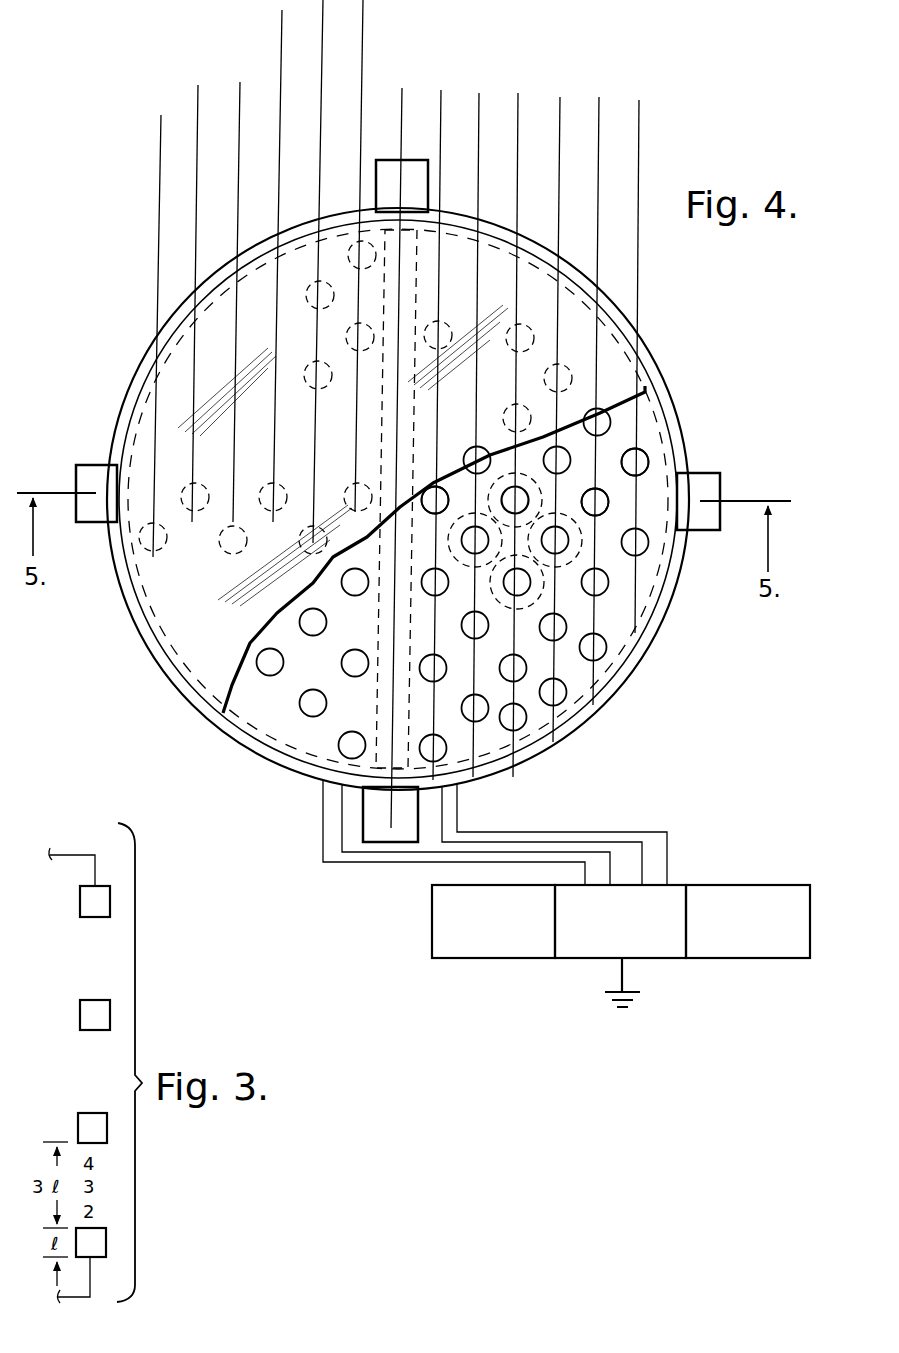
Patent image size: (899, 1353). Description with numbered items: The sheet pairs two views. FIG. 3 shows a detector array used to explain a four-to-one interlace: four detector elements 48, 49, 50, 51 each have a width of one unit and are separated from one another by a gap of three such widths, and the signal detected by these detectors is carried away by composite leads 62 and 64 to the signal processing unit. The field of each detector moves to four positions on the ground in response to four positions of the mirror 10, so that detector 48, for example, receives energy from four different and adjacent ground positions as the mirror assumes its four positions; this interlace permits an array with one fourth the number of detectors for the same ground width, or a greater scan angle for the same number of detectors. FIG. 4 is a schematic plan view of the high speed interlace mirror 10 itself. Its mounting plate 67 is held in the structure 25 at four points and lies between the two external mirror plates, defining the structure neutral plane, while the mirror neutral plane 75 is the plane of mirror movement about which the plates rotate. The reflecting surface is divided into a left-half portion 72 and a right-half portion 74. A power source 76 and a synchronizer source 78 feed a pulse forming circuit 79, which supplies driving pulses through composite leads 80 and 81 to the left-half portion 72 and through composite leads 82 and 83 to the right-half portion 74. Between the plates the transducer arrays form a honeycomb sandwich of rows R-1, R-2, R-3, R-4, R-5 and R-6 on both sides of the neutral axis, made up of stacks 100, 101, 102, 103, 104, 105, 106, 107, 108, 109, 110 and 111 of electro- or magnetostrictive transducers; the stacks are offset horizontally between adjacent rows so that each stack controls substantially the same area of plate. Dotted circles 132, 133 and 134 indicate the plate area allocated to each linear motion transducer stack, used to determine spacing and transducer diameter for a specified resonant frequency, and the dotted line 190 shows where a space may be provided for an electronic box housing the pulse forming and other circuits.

In FIG. 4, the high speed interlace mirror 10 is at (140, 360).
In FIG. 4, the structure 25 is at (423, 182).
In FIG. 3, the detector element 48 is at (105, 1257).
In FIG. 3, the detector element 49 is at (80, 1120).
In FIG. 3, the detector element 50 is at (80, 1007).
In FIG. 3, the detector element 51 is at (85, 910).
In FIG. 3, the composite lead 62 is at (75, 855).
In FIG. 3, the composite lead 64 is at (85, 1300).
In FIG. 4, the mounting plate 67 is at (655, 625).
In FIG. 4, the left-half portion 72 is at (270, 322).
In FIG. 4, the right-half portion 74 is at (550, 307).
In FIG. 4, the mirror neutral plane 75 is at (402, 118).
In FIG. 4, the power source 76 is at (440, 950).
In FIG. 4, the synchronizer source 78 is at (728, 953).
In FIG. 4, the pulse forming circuit 79 is at (573, 953).
In FIG. 4, the composite lead 80 is at (323, 862).
In FIG. 4, the composite lead 81 is at (378, 860).
In FIG. 4, the composite lead 82 is at (645, 843).
In FIG. 4, the composite lead 83 is at (668, 860).
In FIG. 4, the transducer stack 100 is at (643, 472).
In FIG. 4, the transducer stack 101 is at (602, 514).
In FIG. 4, the transducer stack 102 is at (568, 463).
In FIG. 4, the transducer stack 103 is at (502, 585).
In FIG. 4, the transducer stack 104 is at (497, 500).
In FIG. 4, the transducer stack 105 is at (445, 478).
In FIG. 4, the transducer stack 106 is at (355, 490).
In FIG. 4, the transducer stack 107 is at (305, 560).
In FIG. 4, the transducer stack 108 is at (275, 490).
In FIG. 4, the transducer stack 109 is at (225, 560).
In FIG. 4, the transducer stack 110 is at (190, 490).
In FIG. 4, the transducer stack 111 is at (152, 553).
In FIG. 4, the dotted circle 132 is at (527, 607).
In FIG. 4, the dotted circle 133 is at (563, 567).
In FIG. 4, the dotted circle 134 is at (537, 482).
In FIG. 4, the dotted line 190 is at (382, 700).
In FIG. 4, the row R-1 is at (363, 30).
In FIG. 4, the row R-2 is at (323, 45).
In FIG. 4, the row R-3 is at (282, 52).
In FIG. 4, the row R-4 is at (240, 92).
In FIG. 4, the row R-5 is at (198, 100).
In FIG. 4, the row R-6 is at (161, 152).